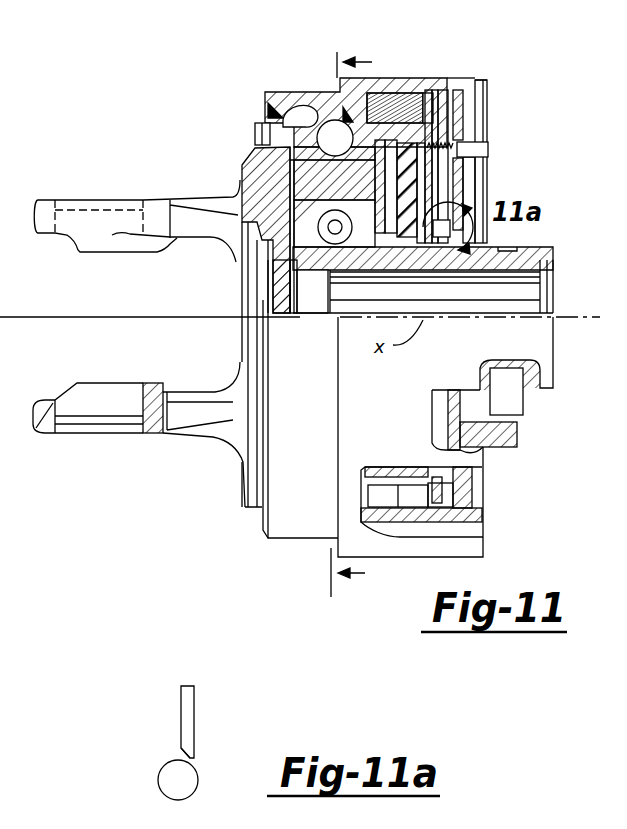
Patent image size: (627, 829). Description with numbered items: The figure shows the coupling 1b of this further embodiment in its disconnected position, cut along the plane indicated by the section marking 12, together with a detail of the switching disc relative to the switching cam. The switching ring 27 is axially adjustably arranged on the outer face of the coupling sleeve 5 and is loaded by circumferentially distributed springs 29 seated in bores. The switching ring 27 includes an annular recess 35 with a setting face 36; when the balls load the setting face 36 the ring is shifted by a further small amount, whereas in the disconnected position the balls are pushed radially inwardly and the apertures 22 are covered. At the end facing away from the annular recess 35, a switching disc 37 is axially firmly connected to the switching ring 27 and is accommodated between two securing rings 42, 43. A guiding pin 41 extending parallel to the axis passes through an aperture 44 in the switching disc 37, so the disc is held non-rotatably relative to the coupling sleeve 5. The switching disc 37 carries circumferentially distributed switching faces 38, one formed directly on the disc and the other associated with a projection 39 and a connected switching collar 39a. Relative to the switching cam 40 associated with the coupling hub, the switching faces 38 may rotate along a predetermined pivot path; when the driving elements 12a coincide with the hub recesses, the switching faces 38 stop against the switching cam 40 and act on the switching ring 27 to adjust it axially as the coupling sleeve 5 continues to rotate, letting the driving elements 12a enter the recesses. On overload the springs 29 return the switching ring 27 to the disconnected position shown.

In FIG. 11, the wheel bearing unit 1b is at (163, 126).
In FIG. 11, the coupling sleeve 5 is at (240, 164).
In FIG. 11, the section line 12 is at (333, 322).
In FIG. 11, the driving elements 12a is at (246, 262).
In FIG. 11, the apertures 22 is at (262, 144).
In FIG. 11, the switching ring 27 is at (378, 78).
In FIG. 11, the springs 29 is at (407, 95).
In FIG. 11, the annular recess 35 is at (307, 112).
In FIG. 11, the setting face 36 is at (277, 107).
In FIG. 11, the switching disc 37 is at (487, 176).
In FIG. 11A, the switching disc 37 is at (195, 708).
In FIG. 11A, the switching faces 38 is at (179, 752).
In FIG. 11, the projection 39 is at (503, 447).
In FIG. 11, the switching collar 39a is at (515, 400).
In FIG. 11, the switching cam 40 is at (497, 183).
In FIG. 11A, the switching cam 40 is at (172, 790).
In FIG. 11, the guiding pin 41 is at (488, 175).
In FIG. 11, the securing ring 42 is at (456, 90).
In FIG. 11, the securing ring 43 is at (487, 82).
In FIG. 11, the aperture 44 is at (478, 145).